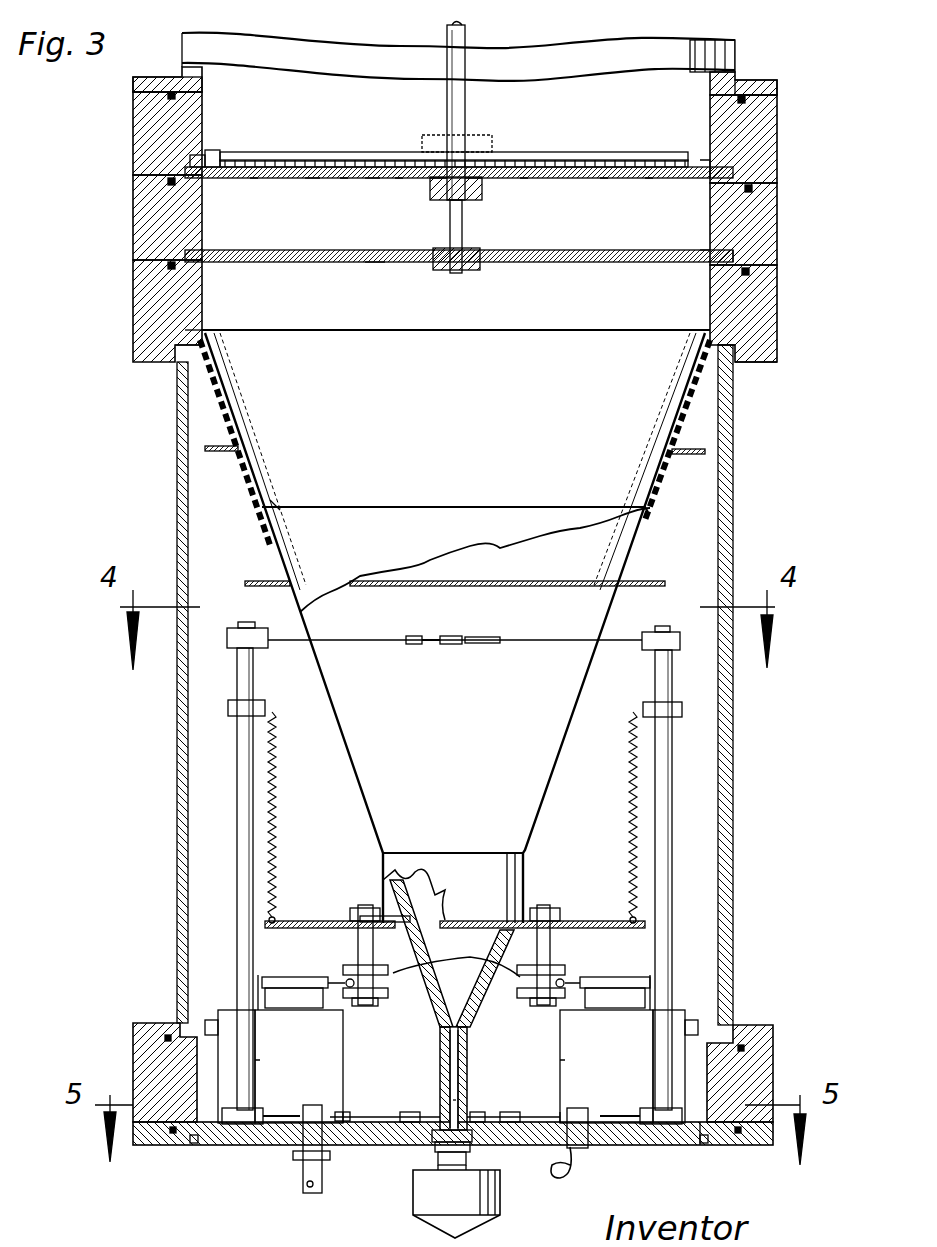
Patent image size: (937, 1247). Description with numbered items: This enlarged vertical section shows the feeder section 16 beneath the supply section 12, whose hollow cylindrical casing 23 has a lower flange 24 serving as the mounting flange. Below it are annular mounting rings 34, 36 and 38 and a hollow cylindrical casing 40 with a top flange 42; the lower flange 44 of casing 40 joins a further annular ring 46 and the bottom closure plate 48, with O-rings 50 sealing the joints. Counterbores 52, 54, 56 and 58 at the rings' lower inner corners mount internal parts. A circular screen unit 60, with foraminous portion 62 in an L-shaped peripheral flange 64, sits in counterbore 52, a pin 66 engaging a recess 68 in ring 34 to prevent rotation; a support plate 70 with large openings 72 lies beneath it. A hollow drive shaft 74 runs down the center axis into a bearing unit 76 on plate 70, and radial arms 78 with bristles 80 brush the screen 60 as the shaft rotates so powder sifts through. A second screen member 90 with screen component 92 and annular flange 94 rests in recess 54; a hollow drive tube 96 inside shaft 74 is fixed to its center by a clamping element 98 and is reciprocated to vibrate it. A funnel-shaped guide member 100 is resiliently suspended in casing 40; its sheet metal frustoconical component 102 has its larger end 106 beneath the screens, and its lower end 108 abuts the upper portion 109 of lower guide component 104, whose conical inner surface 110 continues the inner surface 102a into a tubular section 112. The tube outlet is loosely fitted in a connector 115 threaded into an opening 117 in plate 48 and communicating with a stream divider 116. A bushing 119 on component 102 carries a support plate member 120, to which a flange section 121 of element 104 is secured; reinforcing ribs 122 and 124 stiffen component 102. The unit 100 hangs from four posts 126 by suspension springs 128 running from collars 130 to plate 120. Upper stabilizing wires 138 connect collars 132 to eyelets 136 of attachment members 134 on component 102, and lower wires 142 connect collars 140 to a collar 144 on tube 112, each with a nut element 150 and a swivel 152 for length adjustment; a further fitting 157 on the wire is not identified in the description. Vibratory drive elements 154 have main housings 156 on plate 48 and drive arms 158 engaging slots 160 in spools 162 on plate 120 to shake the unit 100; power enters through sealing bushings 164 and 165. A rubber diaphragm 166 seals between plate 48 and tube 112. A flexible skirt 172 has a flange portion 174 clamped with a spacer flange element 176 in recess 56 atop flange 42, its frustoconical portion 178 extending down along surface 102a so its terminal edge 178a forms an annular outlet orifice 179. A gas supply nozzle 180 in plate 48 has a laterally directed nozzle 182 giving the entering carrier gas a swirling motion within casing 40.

The supply section 12 is at (748, 40).
The feeder section 16 is at (102, 192).
The hollow cylindrical casing 23 is at (740, 58).
The lower flange 24 is at (777, 84).
The annular mounting ring 34 is at (778, 133).
The annular mounting ring 36 is at (778, 215).
The annular mounting ring 38 is at (778, 300).
The hollow cylindrical casing 40 is at (735, 430).
The top flange 42 is at (740, 360).
The lower flange 44 is at (745, 1122).
The annular ring 46 is at (775, 1070).
The bottom closure plate 48 is at (765, 1145).
The O-rings 50 is at (777, 108).
The counterbore 52 is at (708, 167).
The counterbore 54 is at (708, 262).
The counterbore 56 is at (705, 331).
The counterbore 58 is at (705, 1145).
The circular screen unit 60 is at (312, 180).
The central foraminous portion 62 is at (372, 180).
The annular peripheral flange element 64 is at (222, 160).
The pin 66 is at (210, 152).
The recess 68 is at (200, 150).
The circular support plate 70 is at (560, 179).
The openings 72 is at (252, 180).
The hollow drive shaft 74 is at (466, 100).
The bearing unit 76 is at (480, 190).
The radial arms 78 is at (340, 154).
The bristles 80 is at (280, 161).
The second screen member 90 is at (332, 268).
The foraminous screen component 92 is at (375, 263).
The annular flange 94 is at (740, 252).
The hollow drive tube 96 is at (450, 235).
The clamping element 98 is at (482, 258).
The funnel-shaped guide member 100 is at (258, 517).
The frustoconical upper component 102 is at (650, 512).
The inner surface 102a is at (278, 533).
The lower guide component 104 is at (412, 1004).
The larger end 106 is at (735, 395).
The lower end 108 is at (420, 882).
The upper portion 109 is at (460, 1058).
The conical inner surface 110 is at (486, 992).
The tubular section 112 is at (467, 1072).
The connector 115 is at (458, 1200).
The stream divider 116 is at (413, 1185).
The opening 117 is at (472, 1150).
The bushing 119 is at (525, 862).
The support plate member 120 is at (570, 921).
The flange section 121 is at (380, 908).
The annular reinforcing rib 122 is at (650, 470).
The annular reinforcing rib 124 is at (630, 580).
The posts 126 is at (240, 825).
The suspension spring 128 is at (278, 785).
The collar 130 is at (262, 700).
The collar 132 is at (245, 628).
The attachment members 134 is at (470, 645).
The attachment eyelet 136 is at (442, 645).
The stabilizing wires 138 is at (355, 648).
The collar 140 is at (190, 1145).
The stabilizing wires 142 is at (360, 1112).
The collar 144 is at (465, 1100).
The nut element 150 is at (235, 650).
The swivel 152 is at (465, 636).
The vibratory drive elements 154 is at (346, 1060).
The main housings 156 is at (306, 1064).
The coupling 157 is at (412, 636).
The movable drive elements 158 is at (292, 962).
The slots 160 is at (425, 968).
The spools 162 is at (350, 966).
The sealing bushing 164 is at (580, 1150).
The sealing bushing 165 is at (570, 1178).
The rubber diaphragm 166 is at (432, 1142).
The flexible frustoconical skirt 172 is at (198, 398).
The annular flange portion 174 is at (190, 340).
The spacer flange element 176 is at (185, 345).
The frustoconical portion 178 is at (205, 448).
The terminal edge 178a is at (445, 493).
The annular outlet orifice 179 is at (280, 508).
The gas supply nozzle 180 is at (283, 1145).
The laterally directed nozzle 182 is at (335, 1126).